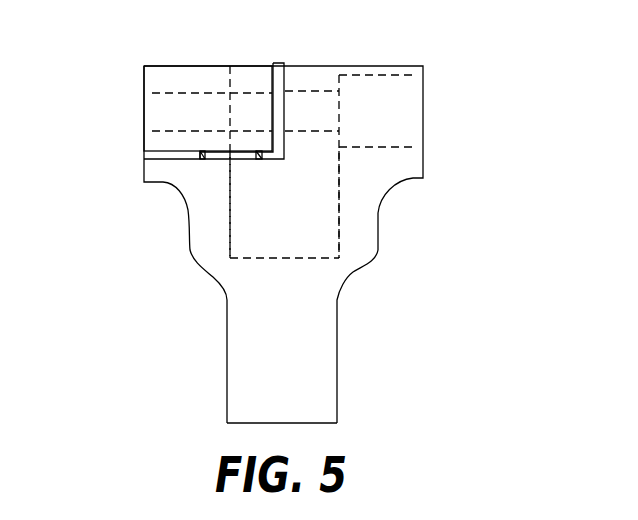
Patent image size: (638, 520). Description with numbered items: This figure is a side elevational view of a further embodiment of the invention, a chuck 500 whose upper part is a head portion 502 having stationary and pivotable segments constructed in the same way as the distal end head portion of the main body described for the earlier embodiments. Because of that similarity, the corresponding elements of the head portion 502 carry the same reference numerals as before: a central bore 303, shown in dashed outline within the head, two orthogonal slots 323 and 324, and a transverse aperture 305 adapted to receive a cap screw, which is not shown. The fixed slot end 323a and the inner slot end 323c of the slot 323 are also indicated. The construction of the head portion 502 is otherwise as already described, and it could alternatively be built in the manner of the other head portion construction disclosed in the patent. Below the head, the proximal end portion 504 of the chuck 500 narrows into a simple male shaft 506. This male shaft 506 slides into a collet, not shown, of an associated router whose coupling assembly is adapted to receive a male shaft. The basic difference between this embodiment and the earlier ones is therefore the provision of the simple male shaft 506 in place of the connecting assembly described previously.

The chuck 500 is at (406, 228).
The head portion 502 is at (426, 158).
The proximal end portion 504 is at (345, 332).
The male shaft 506 is at (310, 380).
The transverse aperture 305 is at (190, 92).
The central bore 303 is at (282, 260).
The orthogonal slot 324 is at (285, 84).
The fixed slot end 323a is at (200, 154).
The inner slot end 323c is at (258, 162).
The orthogonal slot 323 is at (180, 184).